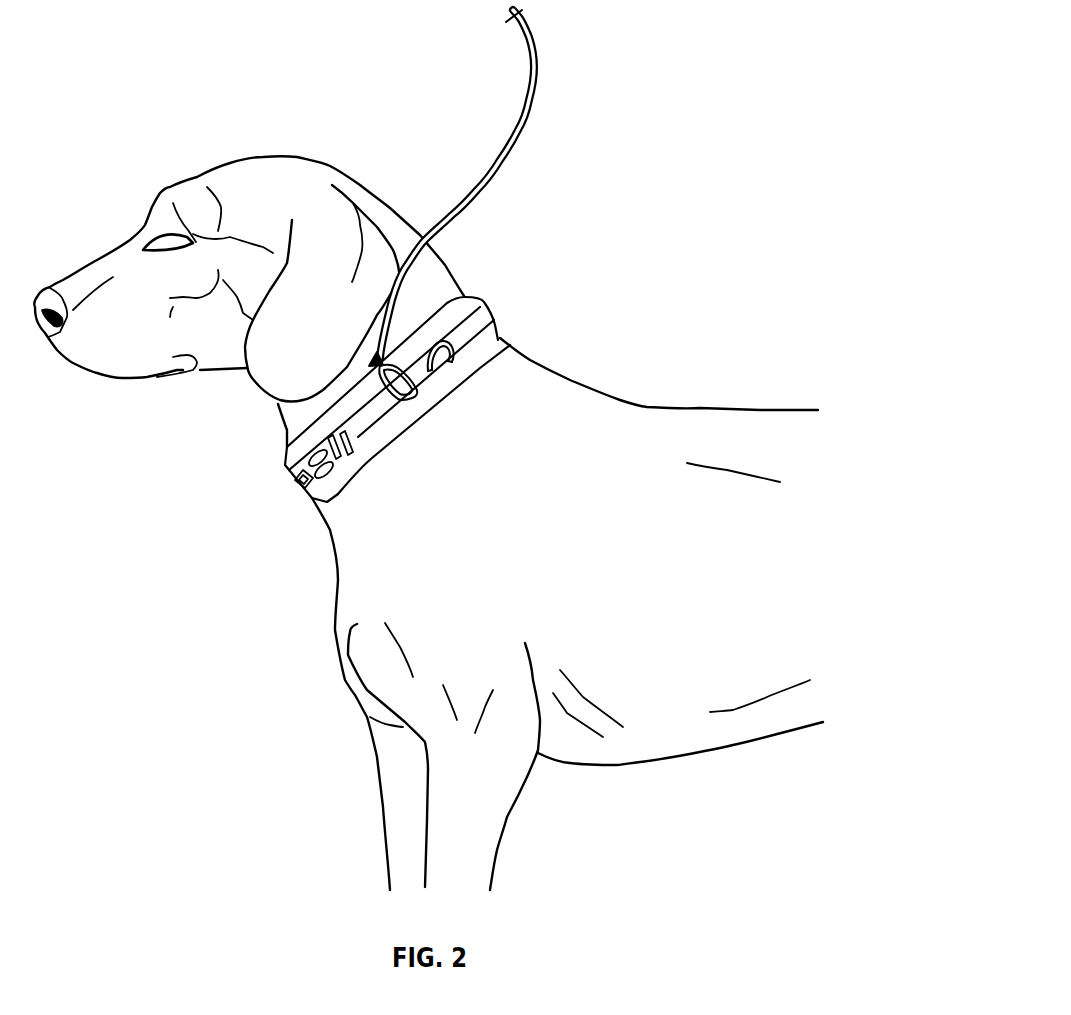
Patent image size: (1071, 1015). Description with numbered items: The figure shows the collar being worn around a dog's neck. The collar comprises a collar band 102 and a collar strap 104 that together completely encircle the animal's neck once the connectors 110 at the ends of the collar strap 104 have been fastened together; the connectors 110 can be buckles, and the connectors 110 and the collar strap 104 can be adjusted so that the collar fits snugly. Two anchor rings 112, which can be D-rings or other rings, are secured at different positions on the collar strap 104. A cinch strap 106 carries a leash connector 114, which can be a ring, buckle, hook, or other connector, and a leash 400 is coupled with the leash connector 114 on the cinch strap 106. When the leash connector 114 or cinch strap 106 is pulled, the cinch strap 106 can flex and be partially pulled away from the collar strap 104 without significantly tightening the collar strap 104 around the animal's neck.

The collar band 102 is at (502, 328).
The collar strap 104 is at (482, 307).
The cinch strap 106 is at (452, 366).
The connector 110 is at (293, 478).
The anchor ring 112 is at (458, 363).
The leash connector 114 is at (408, 400).
The leash 400 is at (520, 147).